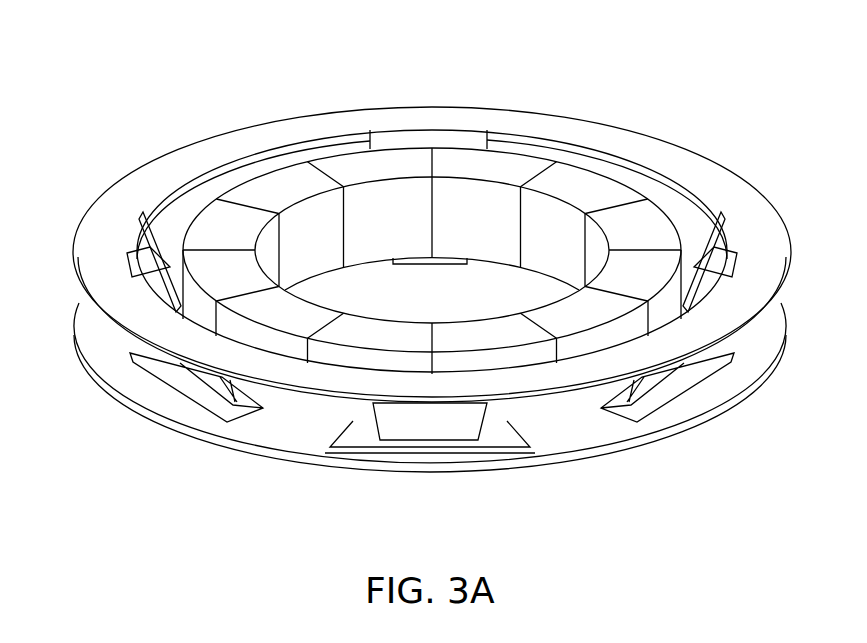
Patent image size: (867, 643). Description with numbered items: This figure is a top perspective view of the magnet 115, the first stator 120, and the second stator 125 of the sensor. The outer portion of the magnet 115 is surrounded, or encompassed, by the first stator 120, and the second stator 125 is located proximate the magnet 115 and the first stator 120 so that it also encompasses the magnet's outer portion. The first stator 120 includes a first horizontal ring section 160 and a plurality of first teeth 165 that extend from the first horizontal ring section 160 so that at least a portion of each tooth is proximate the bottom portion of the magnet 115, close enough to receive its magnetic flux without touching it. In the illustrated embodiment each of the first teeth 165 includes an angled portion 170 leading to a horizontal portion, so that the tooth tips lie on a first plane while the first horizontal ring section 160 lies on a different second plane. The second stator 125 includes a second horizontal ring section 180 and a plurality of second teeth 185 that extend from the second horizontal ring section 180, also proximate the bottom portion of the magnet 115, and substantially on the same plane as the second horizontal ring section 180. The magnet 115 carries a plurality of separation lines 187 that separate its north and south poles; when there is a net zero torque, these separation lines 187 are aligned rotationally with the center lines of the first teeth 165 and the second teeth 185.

The magnet 115 is at (293, 180).
The first stator 120 is at (634, 114).
The second stator 125 is at (773, 401).
The first horizontal ring section 160 is at (745, 185).
The first teeth 165 is at (500, 140).
The angled portion 170 is at (420, 130).
The second horizontal ring section 180 is at (765, 350).
The second teeth 185 is at (297, 433).
The separation lines 187 is at (433, 167).